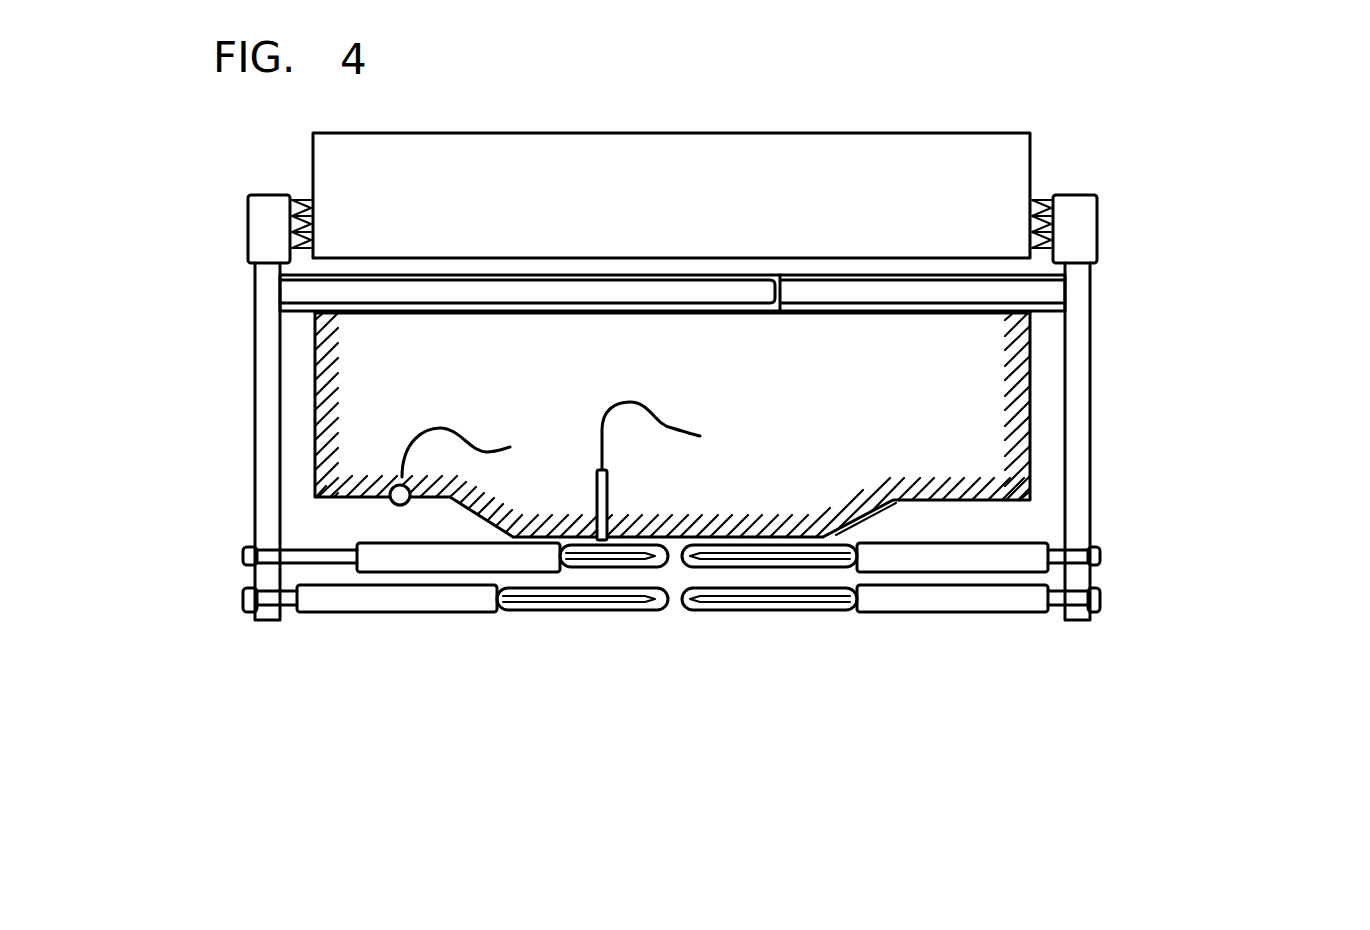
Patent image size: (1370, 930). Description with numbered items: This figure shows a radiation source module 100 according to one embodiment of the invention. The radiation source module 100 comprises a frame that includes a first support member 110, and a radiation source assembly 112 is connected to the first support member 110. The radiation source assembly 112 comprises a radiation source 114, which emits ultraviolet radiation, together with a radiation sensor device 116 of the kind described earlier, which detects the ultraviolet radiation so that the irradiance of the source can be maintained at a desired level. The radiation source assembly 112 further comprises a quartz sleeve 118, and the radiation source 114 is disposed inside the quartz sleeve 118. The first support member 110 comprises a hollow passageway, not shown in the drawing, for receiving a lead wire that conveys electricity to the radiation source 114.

The radiation source module 100 is at (1245, 220).
The first support member 110 is at (256, 443).
The radiation source assembly 112 is at (357, 600).
The radiation source 114 is at (593, 605).
The radiation sensor device 116 is at (644, 496).
The quartz sleeve 118 is at (657, 605).